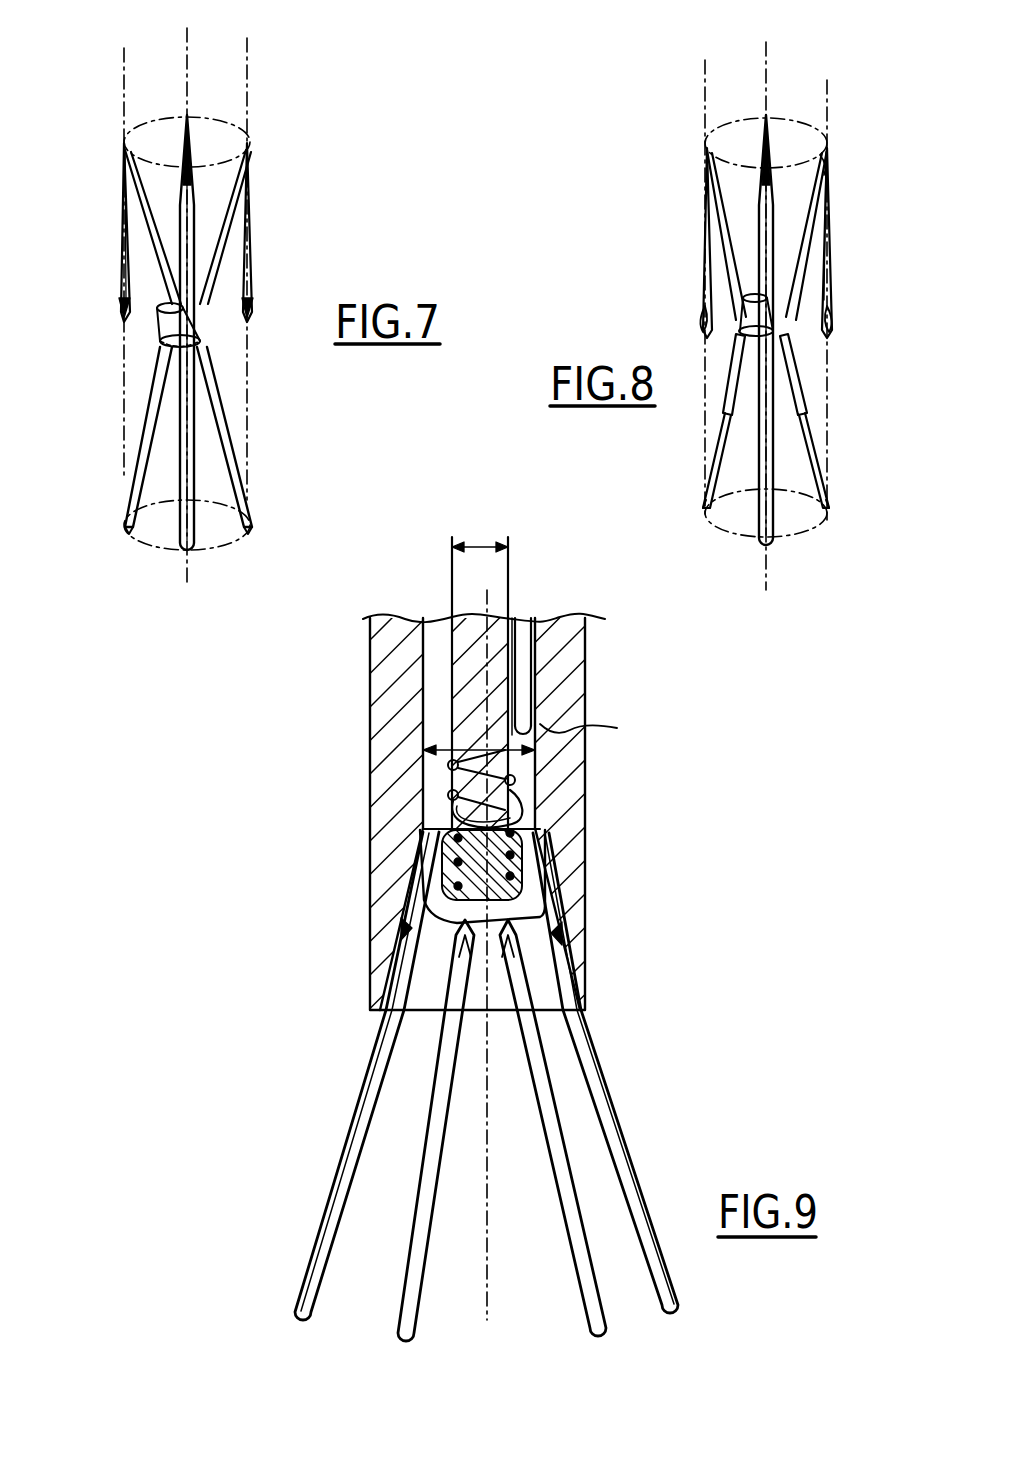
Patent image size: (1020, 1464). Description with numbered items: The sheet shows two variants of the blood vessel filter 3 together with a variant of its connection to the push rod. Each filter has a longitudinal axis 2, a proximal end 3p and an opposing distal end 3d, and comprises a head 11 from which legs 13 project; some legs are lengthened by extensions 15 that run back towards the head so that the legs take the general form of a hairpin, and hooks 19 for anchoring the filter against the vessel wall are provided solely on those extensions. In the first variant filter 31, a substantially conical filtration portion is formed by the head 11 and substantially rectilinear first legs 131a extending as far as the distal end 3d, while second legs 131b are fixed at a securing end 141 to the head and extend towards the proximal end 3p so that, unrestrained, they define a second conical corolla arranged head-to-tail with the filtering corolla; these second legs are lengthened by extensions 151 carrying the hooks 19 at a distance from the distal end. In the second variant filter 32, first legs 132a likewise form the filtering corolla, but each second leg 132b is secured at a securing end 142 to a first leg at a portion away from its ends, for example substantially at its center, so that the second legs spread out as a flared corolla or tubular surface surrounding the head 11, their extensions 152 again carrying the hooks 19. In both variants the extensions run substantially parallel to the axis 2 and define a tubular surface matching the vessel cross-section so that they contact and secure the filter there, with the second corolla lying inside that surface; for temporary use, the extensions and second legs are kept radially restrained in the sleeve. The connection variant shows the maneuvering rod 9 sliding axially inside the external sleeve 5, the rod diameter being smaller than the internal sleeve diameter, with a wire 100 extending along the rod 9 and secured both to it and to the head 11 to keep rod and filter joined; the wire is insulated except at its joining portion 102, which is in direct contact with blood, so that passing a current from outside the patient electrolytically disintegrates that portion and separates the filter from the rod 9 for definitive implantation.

In FIG. 7, the axis 2 is at (196, 58).
In FIG. 9, the axis 2 is at (490, 1240).
In FIG. 9, the filter 3 is at (625, 1140).
In FIG. 7, the proximal end 3p is at (247, 143).
In FIG. 8, the proximal end 3p is at (766, 117).
In FIG. 7, the distal end 3d is at (250, 520).
In FIG. 8, the distal end 3d is at (766, 540).
In FIG. 9, the external sleeve 5 is at (565, 665).
In FIG. 9, the maneuvering rod 9 is at (488, 637).
In FIG. 7, the head 11 is at (210, 332).
In FIG. 8, the head 11 is at (792, 325).
In FIG. 9, the head 11 is at (440, 878).
In FIG. 9, the legs 13 is at (347, 1180).
In FIG. 9, the extensions 15 is at (432, 1193).
In FIG. 7, the hooks 19 is at (124, 302).
In FIG. 8, the hooks 19 is at (698, 322).
In FIG. 9, the hooks 19 is at (405, 930).
In FIG. 7, the first variant filter 31 is at (270, 238).
In FIG. 8, the second variant filter 32 is at (680, 303).
In FIG. 9, the wire 100 is at (527, 620).
In FIG. 9, the joining portion 102 is at (443, 798).
In FIG. 7, the first legs 131a is at (147, 398).
In FIG. 7, the second legs 131b is at (155, 245).
In FIG. 8, the first legs 132a is at (712, 458).
In FIG. 8, the second legs 132b is at (722, 245).
In FIG. 7, the securing end 141 is at (165, 320).
In FIG. 8, the securing end 142 is at (800, 385).
In FIG. 7, the extensions 151 is at (124, 262).
In FIG. 8, the extensions 152 is at (828, 225).